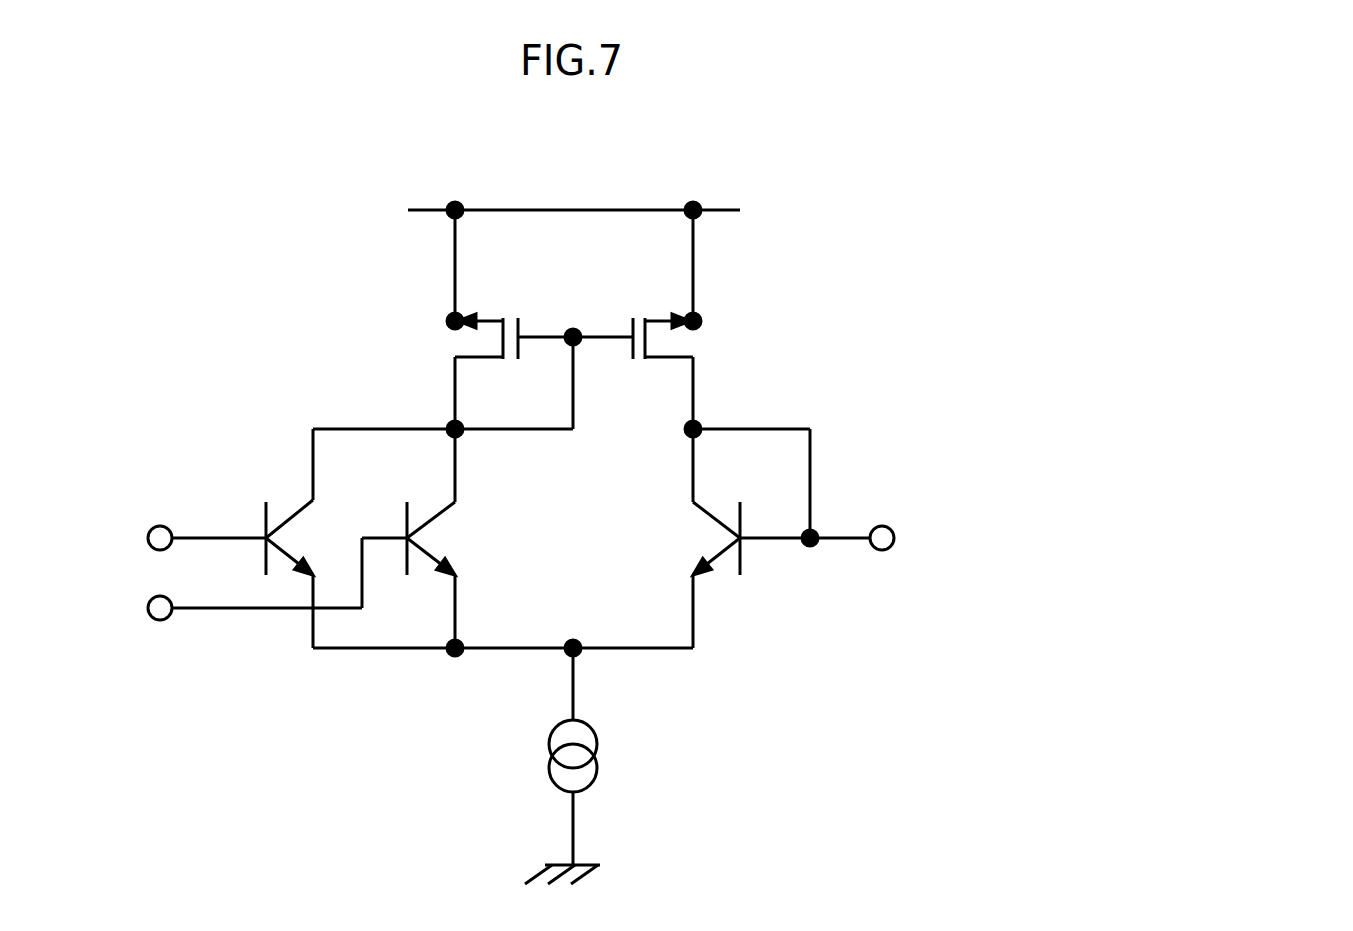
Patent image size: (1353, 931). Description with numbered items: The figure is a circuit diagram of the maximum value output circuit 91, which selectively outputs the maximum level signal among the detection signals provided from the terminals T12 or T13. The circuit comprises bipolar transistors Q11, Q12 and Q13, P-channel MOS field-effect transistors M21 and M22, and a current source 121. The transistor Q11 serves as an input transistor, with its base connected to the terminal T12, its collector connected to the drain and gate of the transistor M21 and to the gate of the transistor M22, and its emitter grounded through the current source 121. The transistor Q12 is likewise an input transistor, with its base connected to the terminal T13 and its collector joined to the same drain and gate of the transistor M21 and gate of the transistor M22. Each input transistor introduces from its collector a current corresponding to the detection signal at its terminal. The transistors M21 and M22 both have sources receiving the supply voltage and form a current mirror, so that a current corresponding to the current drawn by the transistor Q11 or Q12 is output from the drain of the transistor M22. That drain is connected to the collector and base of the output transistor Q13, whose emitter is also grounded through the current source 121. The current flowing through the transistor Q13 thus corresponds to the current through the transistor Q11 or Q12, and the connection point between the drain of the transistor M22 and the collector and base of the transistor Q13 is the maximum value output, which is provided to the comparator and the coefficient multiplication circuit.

The maximum value output circuit 91 is at (204, 163).
The current source 121 is at (595, 755).
The terminal T12 is at (158, 540).
The terminal T13 is at (157, 607).
The transistor Q11 is at (330, 538).
The transistor Q12 is at (467, 569).
The transistor Q13 is at (750, 568).
The transistor M21 is at (479, 371).
The transistor M22 is at (668, 371).